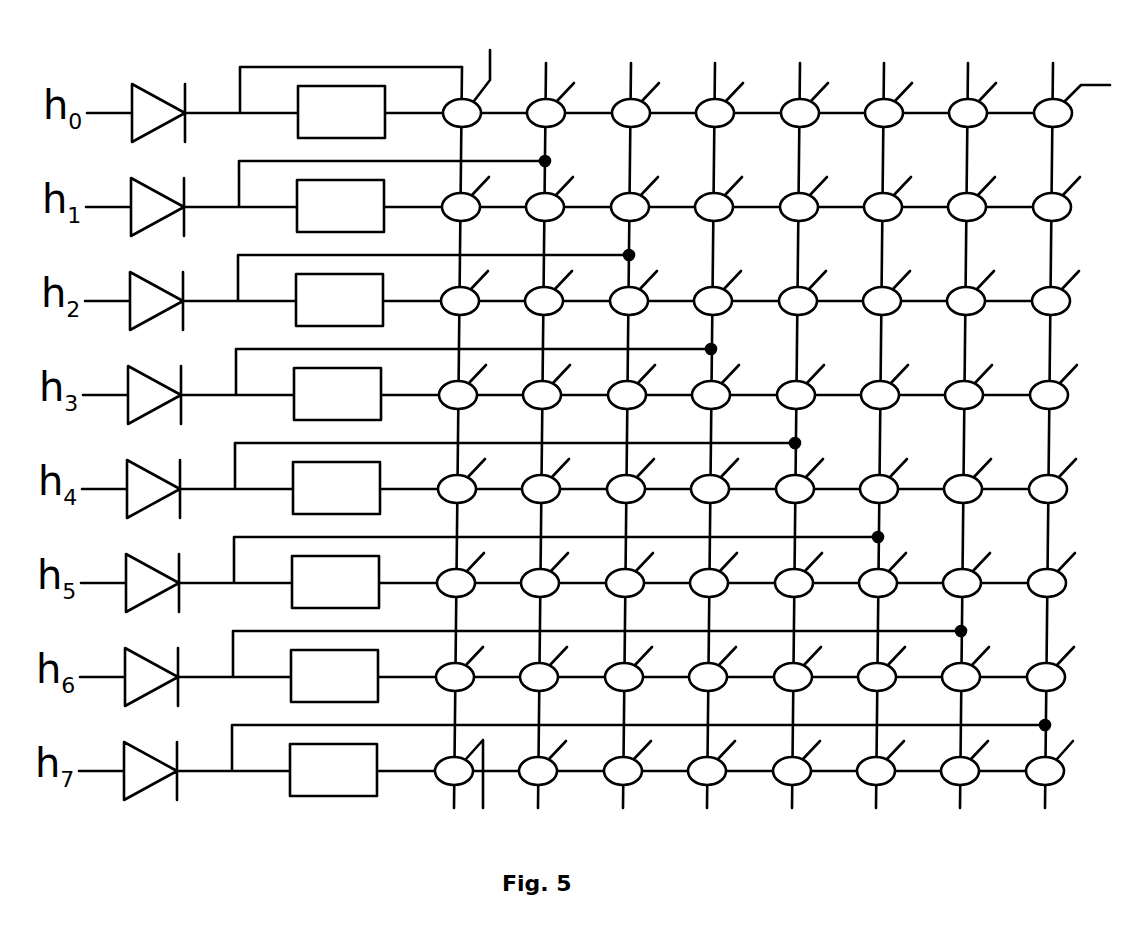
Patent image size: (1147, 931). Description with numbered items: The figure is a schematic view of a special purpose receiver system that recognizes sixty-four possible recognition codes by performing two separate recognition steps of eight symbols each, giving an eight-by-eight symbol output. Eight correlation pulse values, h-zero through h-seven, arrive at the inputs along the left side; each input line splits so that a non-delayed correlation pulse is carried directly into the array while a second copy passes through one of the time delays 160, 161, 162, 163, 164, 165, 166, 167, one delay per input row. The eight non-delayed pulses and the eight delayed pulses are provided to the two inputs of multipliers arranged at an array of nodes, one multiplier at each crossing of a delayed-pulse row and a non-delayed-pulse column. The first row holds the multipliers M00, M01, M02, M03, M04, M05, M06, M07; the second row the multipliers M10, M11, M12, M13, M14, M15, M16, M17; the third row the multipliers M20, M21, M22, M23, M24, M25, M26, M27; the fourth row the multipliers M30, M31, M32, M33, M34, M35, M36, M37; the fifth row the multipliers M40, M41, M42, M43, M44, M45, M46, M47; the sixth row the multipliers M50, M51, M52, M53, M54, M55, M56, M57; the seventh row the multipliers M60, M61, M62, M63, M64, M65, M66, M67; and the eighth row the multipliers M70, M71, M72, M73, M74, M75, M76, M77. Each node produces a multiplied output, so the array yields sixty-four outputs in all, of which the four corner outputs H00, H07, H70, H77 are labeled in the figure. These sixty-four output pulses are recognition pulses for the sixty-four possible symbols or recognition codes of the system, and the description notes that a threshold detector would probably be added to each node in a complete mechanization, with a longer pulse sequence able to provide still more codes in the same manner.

The time delay 160 is at (364, 109).
The time delay 161 is at (363, 203).
The time delay 162 is at (362, 297).
The time delay 163 is at (360, 391).
The time delay 164 is at (359, 485).
The time delay 165 is at (358, 579).
The time delay 166 is at (357, 673).
The time delay 167 is at (356, 767).
The multiplier M00 is at (485, 123).
The multiplier M01 is at (569, 115).
The multiplier M02 is at (654, 115).
The multiplier M03 is at (738, 115).
The multiplier M04 is at (823, 115).
The multiplier M05 is at (907, 115).
The multiplier M06 is at (991, 115).
The multiplier M07 is at (1076, 123).
The multiplier M10 is at (484, 209).
The multiplier M11 is at (568, 209).
The multiplier M12 is at (653, 209).
The multiplier M13 is at (737, 209).
The multiplier M14 is at (822, 209).
The multiplier M15 is at (906, 209).
The multiplier M16 is at (990, 209).
The multiplier M17 is at (1075, 209).
The multiplier M20 is at (483, 303).
The multiplier M21 is at (567, 303).
The multiplier M22 is at (652, 303).
The multiplier M23 is at (736, 303).
The multiplier M24 is at (821, 303).
The multiplier M25 is at (905, 303).
The multiplier M26 is at (989, 303).
The multiplier M27 is at (1074, 303).
The multiplier M30 is at (481, 397).
The multiplier M31 is at (565, 397).
The multiplier M32 is at (650, 397).
The multiplier M33 is at (734, 397).
The multiplier M34 is at (819, 397).
The multiplier M35 is at (903, 397).
The multiplier M36 is at (987, 397).
The multiplier M37 is at (1072, 397).
The multiplier M40 is at (480, 491).
The multiplier M41 is at (564, 491).
The multiplier M42 is at (649, 491).
The multiplier M43 is at (733, 491).
The multiplier M44 is at (818, 491).
The multiplier M45 is at (902, 491).
The multiplier M46 is at (986, 491).
The multiplier M47 is at (1071, 491).
The multiplier M50 is at (479, 585).
The multiplier M51 is at (563, 585).
The multiplier M52 is at (648, 585).
The multiplier M53 is at (732, 585).
The multiplier M54 is at (817, 585).
The multiplier M55 is at (901, 585).
The multiplier M56 is at (985, 585).
The multiplier M57 is at (1070, 585).
The multiplier M60 is at (478, 679).
The multiplier M61 is at (562, 679).
The multiplier M62 is at (647, 679).
The multiplier M63 is at (731, 679).
The multiplier M64 is at (816, 679).
The multiplier M65 is at (900, 679).
The multiplier M66 is at (984, 679).
The multiplier M67 is at (1069, 679).
The multiplier M70 is at (430, 781).
The multiplier M71 is at (561, 773).
The multiplier M72 is at (646, 773).
The multiplier M73 is at (730, 773).
The multiplier M74 is at (815, 773).
The multiplier M75 is at (899, 773).
The multiplier M76 is at (983, 773).
The multiplier M77 is at (1068, 781).
The multiplied output H00 is at (499, 64).
The multiplied output H07 is at (1105, 88).
The multiplied output H70 is at (485, 789).
The multiplied output H77 is at (1083, 746).